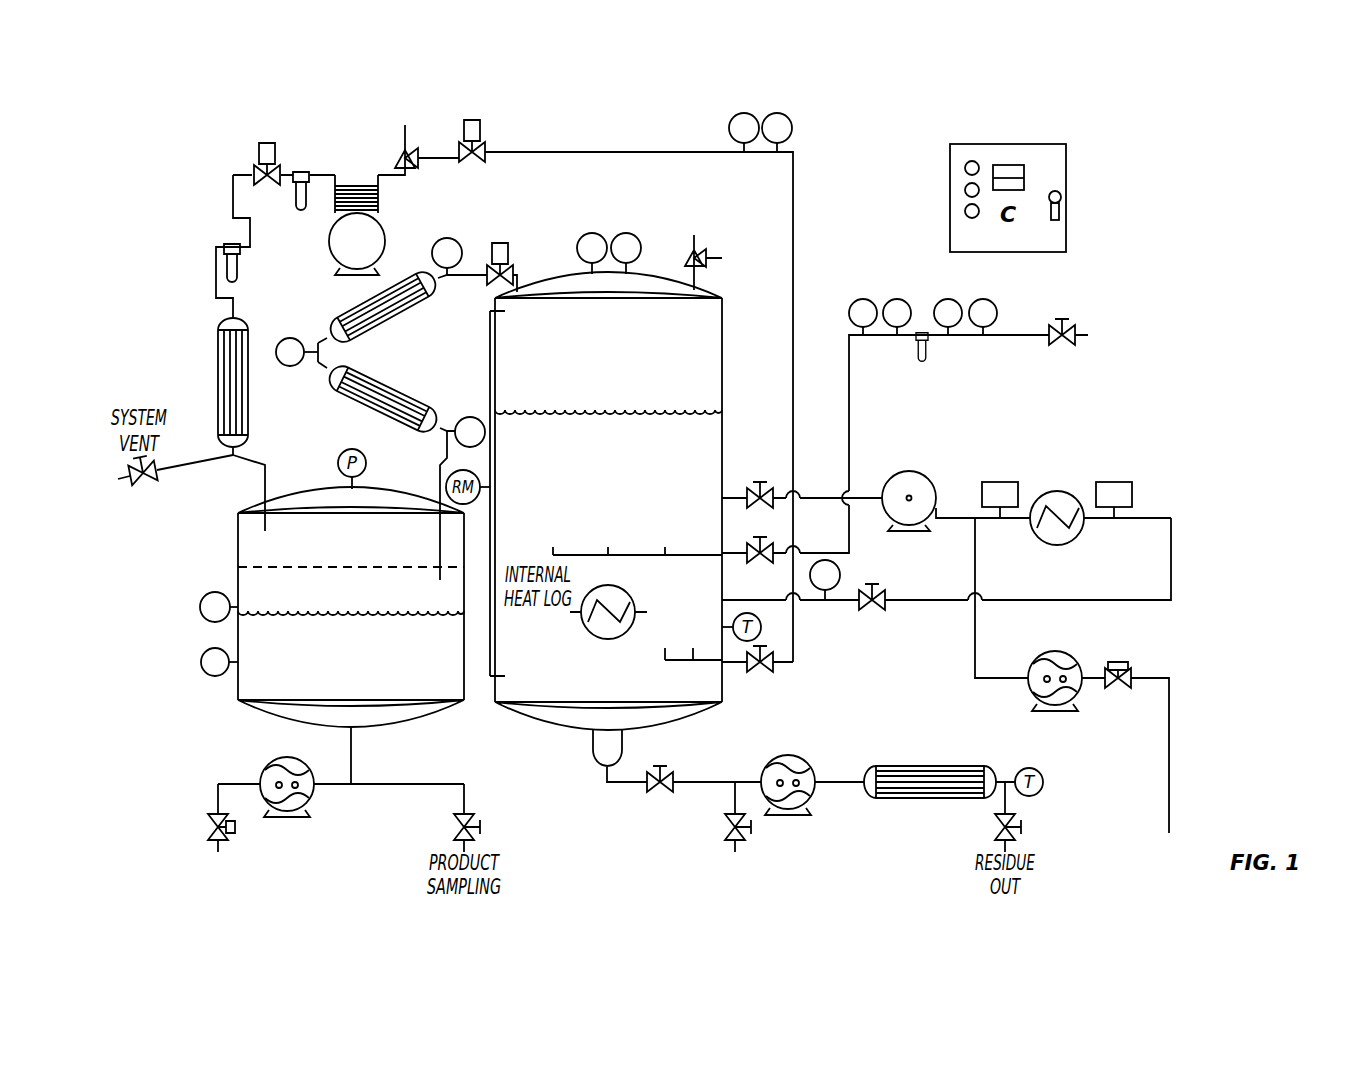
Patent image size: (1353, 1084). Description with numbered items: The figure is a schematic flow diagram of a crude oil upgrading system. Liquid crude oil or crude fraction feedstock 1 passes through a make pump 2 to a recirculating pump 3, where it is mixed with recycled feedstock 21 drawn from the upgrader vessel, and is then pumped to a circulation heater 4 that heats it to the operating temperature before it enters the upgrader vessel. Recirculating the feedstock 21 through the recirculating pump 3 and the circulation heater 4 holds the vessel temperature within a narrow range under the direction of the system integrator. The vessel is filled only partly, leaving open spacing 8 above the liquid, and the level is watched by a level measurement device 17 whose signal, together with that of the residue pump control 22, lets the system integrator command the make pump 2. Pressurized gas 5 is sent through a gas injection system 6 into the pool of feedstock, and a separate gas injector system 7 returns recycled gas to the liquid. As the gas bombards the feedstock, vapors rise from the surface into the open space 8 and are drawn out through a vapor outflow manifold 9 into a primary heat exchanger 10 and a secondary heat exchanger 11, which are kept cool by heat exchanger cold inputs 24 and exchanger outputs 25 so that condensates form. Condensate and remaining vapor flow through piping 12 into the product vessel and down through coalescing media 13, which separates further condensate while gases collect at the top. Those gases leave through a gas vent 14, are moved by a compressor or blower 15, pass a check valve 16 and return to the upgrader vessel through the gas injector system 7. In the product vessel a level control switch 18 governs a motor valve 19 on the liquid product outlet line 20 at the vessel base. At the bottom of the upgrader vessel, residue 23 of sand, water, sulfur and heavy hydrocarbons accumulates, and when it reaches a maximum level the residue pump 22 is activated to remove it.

The feedstock 1 is at (1155, 776).
The make pump 2 is at (1040, 641).
The recirculating pump 3 is at (947, 512).
The circulation heater 4 is at (1076, 515).
The pressurized gas 5 is at (941, 431).
The gas injection system 6 is at (637, 533).
The gas injector system 7 is at (678, 671).
The open spacing 8 is at (608, 457).
The vapor outflow manifold 9 is at (529, 267).
The primary heat exchanger 10 is at (384, 292).
The secondary heat exchanger 11 is at (361, 399).
The piping 12 is at (407, 505).
The coalescing media 13 is at (351, 607).
The gas vent 14 is at (281, 484).
The compressor and/or blower 15 is at (392, 188).
The check valve 16 is at (662, 387).
The level measurement device 17 is at (530, 493).
The level control switch 18 is at (188, 624).
The motor valve 19 is at (192, 841).
The liquid product outlet line 20 is at (310, 796).
The recycled feedstock 21 is at (906, 571).
The residue pump 22 is at (799, 794).
The residue 23 is at (657, 816).
The heat exchanger cold input 24 is at (376, 338).
The heat exchanger output 25 is at (447, 407).